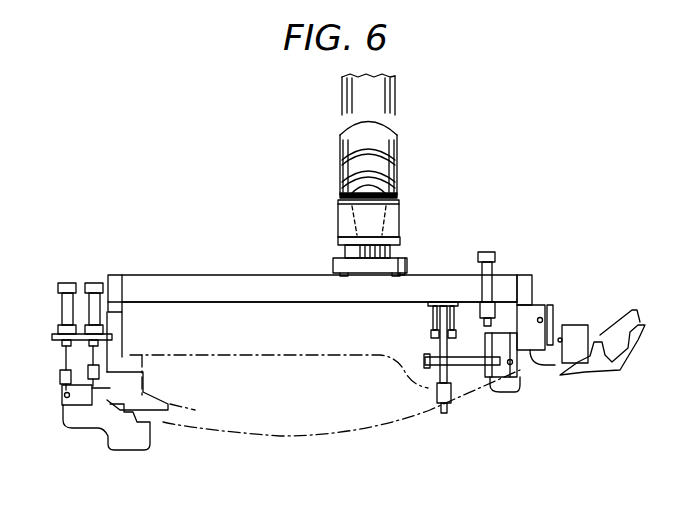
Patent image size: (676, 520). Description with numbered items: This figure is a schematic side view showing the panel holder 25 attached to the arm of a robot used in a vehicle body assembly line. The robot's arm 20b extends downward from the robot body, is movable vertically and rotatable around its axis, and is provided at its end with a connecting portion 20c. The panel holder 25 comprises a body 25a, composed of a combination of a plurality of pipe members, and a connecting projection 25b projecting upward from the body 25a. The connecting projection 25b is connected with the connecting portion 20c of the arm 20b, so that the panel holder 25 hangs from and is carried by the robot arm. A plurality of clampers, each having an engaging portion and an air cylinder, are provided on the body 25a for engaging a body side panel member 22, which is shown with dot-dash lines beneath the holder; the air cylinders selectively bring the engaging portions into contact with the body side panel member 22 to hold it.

The arm 20b is at (385, 94).
The connecting portion 20c is at (398, 219).
The connecting projection 25b is at (343, 251).
The panel holder 25 is at (148, 268).
The body 25a is at (205, 278).
The body side panel member 22 is at (377, 432).